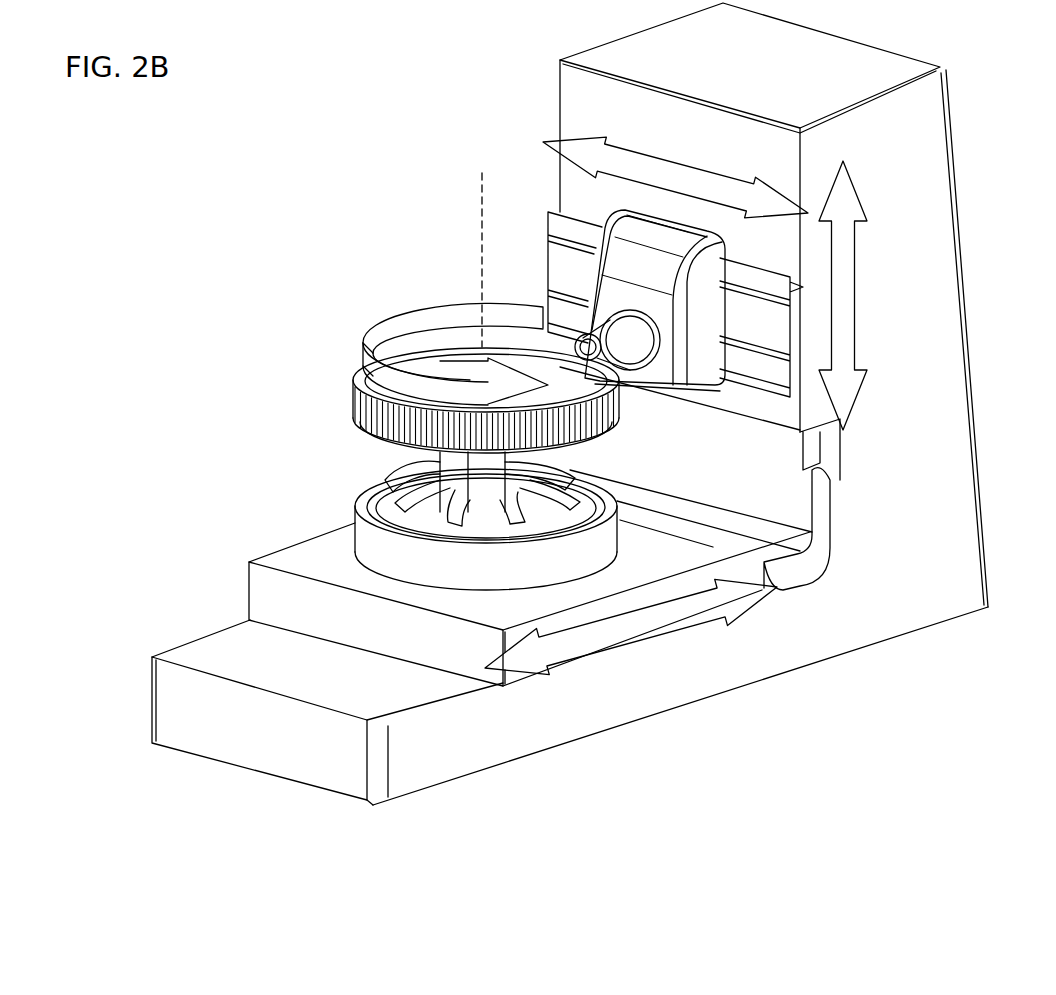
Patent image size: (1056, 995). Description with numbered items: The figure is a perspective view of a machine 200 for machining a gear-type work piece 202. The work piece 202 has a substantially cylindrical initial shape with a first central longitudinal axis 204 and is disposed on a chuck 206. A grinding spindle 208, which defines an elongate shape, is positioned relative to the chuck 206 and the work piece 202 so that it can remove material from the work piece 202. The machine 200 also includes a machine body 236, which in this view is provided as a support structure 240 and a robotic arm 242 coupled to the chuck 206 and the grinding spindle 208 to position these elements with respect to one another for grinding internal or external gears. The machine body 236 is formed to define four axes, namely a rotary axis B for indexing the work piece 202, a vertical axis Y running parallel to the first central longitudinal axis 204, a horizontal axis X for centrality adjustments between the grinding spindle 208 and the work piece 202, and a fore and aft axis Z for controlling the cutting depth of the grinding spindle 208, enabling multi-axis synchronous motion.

The machine 200 is at (200, 764).
The work piece 202 is at (352, 400).
The first central longitudinal axis 204 is at (480, 224).
The chuck 206 is at (372, 538).
The grinding spindle 208 is at (607, 335).
The machine body 236 is at (285, 773).
The support structure 240 is at (845, 652).
The robotic arm 242 is at (603, 222).